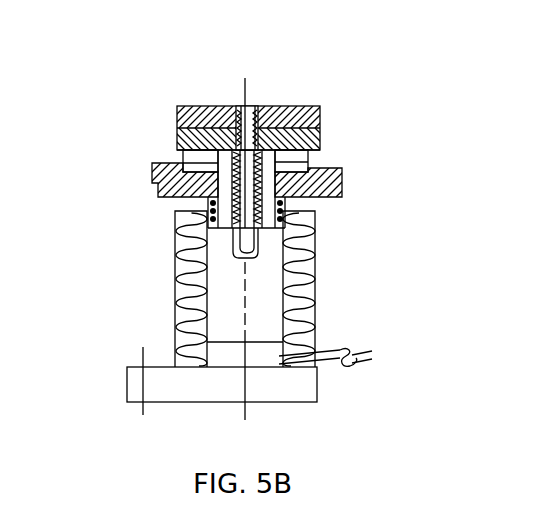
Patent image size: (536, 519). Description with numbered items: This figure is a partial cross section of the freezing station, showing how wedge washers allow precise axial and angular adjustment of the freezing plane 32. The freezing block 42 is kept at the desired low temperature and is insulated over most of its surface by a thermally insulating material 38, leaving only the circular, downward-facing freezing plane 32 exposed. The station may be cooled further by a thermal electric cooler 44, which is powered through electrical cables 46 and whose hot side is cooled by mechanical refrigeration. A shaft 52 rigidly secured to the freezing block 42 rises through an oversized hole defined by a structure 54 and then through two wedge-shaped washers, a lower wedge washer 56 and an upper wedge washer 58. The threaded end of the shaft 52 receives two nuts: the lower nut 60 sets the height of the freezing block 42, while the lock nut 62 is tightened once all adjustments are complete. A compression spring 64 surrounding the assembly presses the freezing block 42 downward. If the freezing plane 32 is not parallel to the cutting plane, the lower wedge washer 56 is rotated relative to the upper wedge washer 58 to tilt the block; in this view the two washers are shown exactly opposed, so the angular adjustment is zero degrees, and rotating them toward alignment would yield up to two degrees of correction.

The freezing plane 32 is at (261, 372).
The thermally insulating material 38 is at (319, 256).
The freezing block 42 is at (265, 293).
The thermal electric cooler 44 is at (215, 355).
The electrical cables 46 is at (375, 362).
The shaft 52 is at (230, 247).
The structure 54 is at (156, 187).
The lower wedge washer 56 is at (302, 162).
The upper wedge washer 58 is at (203, 165).
The lower nut 60 is at (175, 141).
The lock nut 62 is at (322, 124).
The compression spring 64 is at (287, 211).